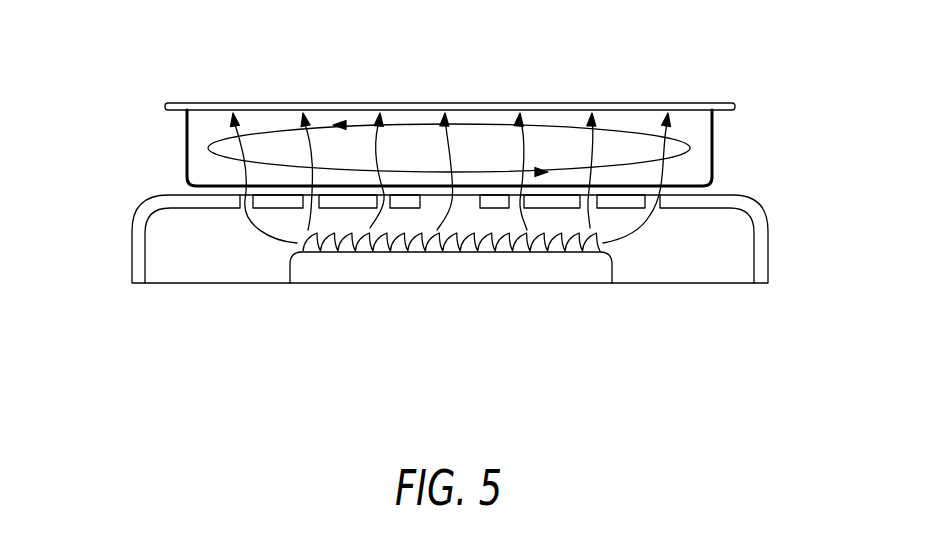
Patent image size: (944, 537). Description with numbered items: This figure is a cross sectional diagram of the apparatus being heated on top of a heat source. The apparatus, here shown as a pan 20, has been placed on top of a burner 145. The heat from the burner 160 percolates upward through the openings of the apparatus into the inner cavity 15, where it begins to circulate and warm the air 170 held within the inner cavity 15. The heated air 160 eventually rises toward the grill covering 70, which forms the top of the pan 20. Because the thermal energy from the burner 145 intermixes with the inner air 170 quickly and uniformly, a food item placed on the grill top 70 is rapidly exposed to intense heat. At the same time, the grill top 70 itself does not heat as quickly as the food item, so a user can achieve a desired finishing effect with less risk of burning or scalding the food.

The pan 20 is at (168, 147).
The grill covering 70 is at (495, 103).
The inner cavity 15 is at (704, 146).
The burner 145 is at (131, 249).
The heat from the burner 160 is at (307, 123).
The air within the inner cavity 170 is at (255, 132).